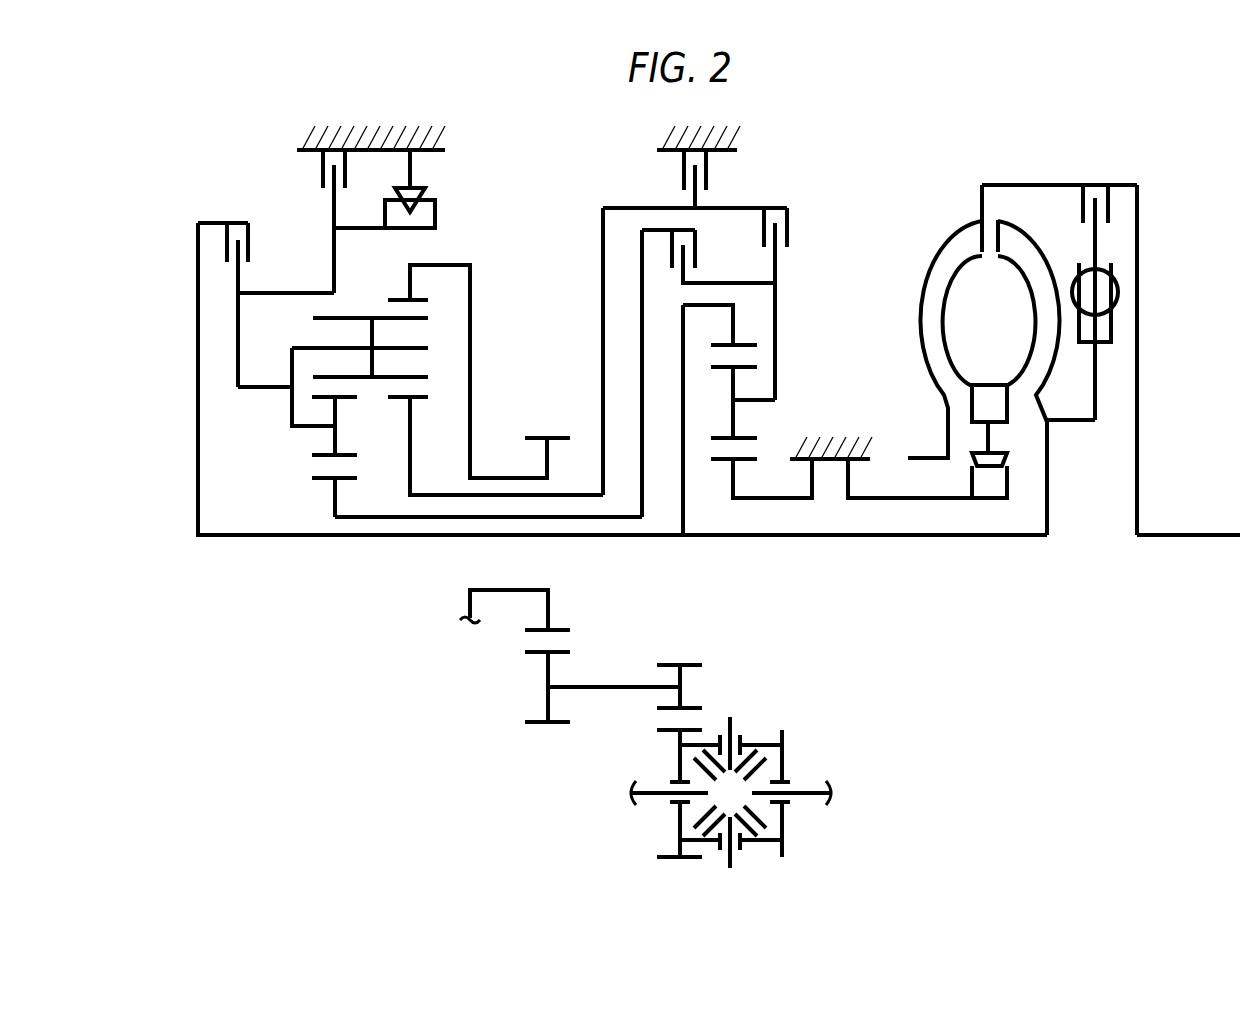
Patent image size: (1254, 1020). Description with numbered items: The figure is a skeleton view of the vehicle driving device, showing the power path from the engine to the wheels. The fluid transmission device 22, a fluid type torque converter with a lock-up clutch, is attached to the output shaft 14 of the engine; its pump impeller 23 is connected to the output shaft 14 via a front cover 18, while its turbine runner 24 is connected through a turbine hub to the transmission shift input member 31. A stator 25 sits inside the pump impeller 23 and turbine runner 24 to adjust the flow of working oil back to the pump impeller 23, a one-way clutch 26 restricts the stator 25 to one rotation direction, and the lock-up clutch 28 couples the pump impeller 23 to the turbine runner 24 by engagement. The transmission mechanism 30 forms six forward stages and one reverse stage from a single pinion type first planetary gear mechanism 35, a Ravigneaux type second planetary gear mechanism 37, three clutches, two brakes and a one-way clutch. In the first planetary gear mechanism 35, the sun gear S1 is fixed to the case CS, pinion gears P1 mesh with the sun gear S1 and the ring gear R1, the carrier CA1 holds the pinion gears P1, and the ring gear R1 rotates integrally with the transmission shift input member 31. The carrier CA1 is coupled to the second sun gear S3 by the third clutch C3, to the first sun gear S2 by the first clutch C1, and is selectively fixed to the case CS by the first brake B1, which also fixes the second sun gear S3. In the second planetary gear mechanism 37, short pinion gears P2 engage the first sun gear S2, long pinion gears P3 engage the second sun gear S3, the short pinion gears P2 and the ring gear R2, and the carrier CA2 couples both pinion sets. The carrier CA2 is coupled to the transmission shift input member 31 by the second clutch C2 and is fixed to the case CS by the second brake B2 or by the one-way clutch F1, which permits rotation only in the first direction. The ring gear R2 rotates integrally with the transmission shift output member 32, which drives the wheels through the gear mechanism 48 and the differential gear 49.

The transmission mechanism 30 is at (812, 202).
The case CS is at (372, 150).
The second brake B2 is at (315, 166).
The one-way clutch F1 is at (440, 188).
The second clutch C2 is at (255, 238).
The carrier CA2 is at (258, 390).
The long pinion gears P3 is at (325, 316).
The ring gear R2 is at (422, 300).
The short pinion gears P2 is at (312, 442).
The first sun gear S2 is at (333, 497).
The second sun gear S3 is at (398, 400).
The second planetary gear mechanism 37 is at (288, 476).
The first brake B1 is at (683, 170).
The first clutch C1 is at (672, 255).
The third clutch C3 is at (790, 228).
The ring gear R1 is at (745, 345).
The first planetary gear mechanism 35 is at (786, 333).
The carrier CA1 is at (777, 396).
The pinion gears P1 is at (730, 380).
The sun gear S1 is at (730, 478).
The transmission shift input member 31 is at (830, 537).
The fluid transmission device 22 is at (952, 224).
The pump impeller 23 is at (938, 280).
The turbine runner 24 is at (1020, 245).
The stator 25 is at (1000, 421).
The one-way clutch 26 is at (990, 493).
The lock-up clutch 28 is at (1114, 206).
The front cover 18 is at (1138, 431).
The output shaft 14 is at (1185, 537).
The transmission shift output member 32 is at (505, 593).
The gear mechanism 48 is at (590, 664).
The differential gear 49 is at (760, 722).